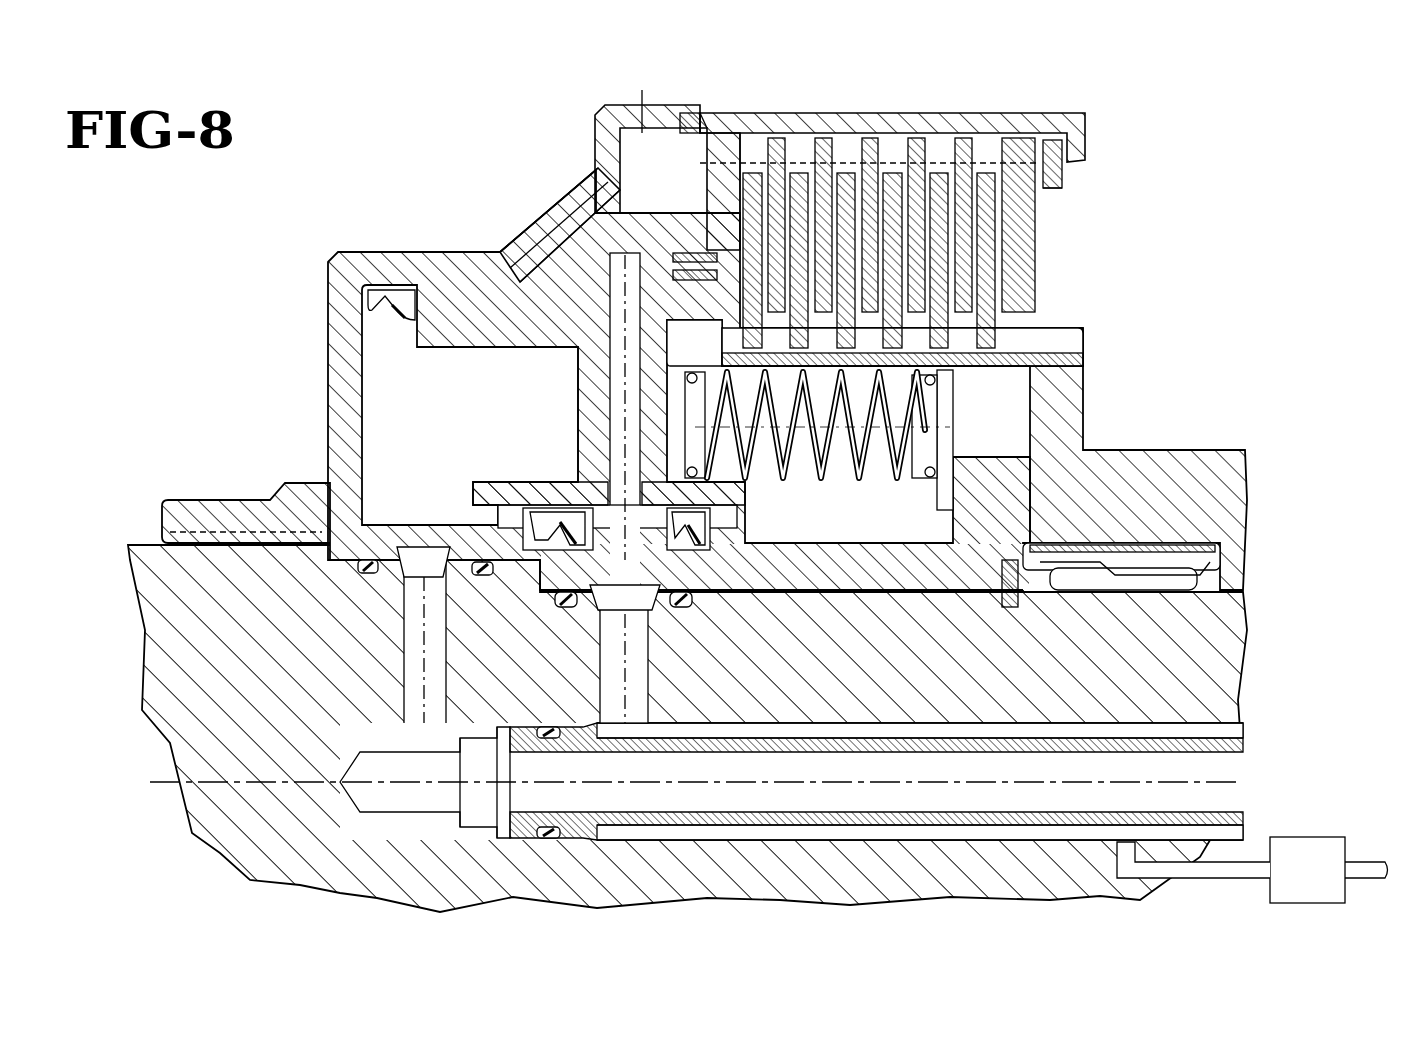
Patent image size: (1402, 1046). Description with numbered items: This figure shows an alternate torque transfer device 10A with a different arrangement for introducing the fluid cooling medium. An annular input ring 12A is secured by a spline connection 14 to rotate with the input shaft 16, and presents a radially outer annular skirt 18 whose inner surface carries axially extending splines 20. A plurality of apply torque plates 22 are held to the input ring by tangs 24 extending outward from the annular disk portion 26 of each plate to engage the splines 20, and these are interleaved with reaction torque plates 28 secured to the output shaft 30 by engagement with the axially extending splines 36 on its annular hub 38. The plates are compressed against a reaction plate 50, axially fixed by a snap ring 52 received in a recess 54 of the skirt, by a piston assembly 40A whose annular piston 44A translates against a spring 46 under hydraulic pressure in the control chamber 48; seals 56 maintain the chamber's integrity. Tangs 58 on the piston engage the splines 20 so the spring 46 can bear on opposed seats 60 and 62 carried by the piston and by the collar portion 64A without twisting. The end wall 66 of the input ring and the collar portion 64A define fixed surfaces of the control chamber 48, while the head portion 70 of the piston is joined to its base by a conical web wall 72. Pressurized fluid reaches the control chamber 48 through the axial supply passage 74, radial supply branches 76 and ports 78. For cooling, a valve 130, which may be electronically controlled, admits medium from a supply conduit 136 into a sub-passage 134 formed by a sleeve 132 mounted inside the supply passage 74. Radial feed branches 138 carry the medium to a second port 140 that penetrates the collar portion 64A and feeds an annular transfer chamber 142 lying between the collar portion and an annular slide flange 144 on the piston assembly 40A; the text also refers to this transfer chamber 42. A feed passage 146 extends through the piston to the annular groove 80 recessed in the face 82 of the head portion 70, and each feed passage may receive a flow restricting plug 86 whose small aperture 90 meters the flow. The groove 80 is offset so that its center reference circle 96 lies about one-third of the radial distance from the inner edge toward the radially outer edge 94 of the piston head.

The torque transfer device 10A is at (1150, 230).
The input ring 12A is at (518, 232).
The spline connection 14 is at (165, 535).
The input shaft 16 is at (180, 628).
The annular skirt 18 is at (870, 132).
The axially extending splines 20 is at (1072, 148).
The apply torque plates 22 is at (920, 285).
The tangs 24 is at (963, 140).
The annular disk portion 26 is at (963, 320).
The reaction torque plates 28 is at (943, 220).
The output shaft 30 is at (1197, 448).
The axially extending splines 36 is at (1065, 345).
The annular hub 38 is at (997, 370).
The piston assembly 40A is at (562, 236).
The transfer chamber 42 is at (845, 162).
The annular piston 44A is at (592, 220).
The spring 46 is at (862, 455).
The control chamber 48 is at (405, 418).
The reaction plate 50 is at (1018, 185).
The snap ring 52 is at (1055, 177).
The recess 54 is at (1052, 150).
The seals 56 is at (400, 300).
The tangs 58 is at (750, 168).
The seat 60 is at (695, 410).
The seat 62 is at (935, 445).
The collar portion 64A is at (885, 572).
The end wall 66 is at (345, 383).
The head portion 70 is at (695, 138).
The conical web wall 72 is at (583, 247).
The supply passage 74 is at (1210, 765).
The radial supply branches 76 is at (412, 642).
The ports 78 is at (436, 530).
The annular groove 80 is at (730, 277).
The face 82 is at (748, 152).
The flow restricting plug 86 is at (700, 275).
The aperture 90 is at (668, 258).
The radially outer edge 94 is at (707, 128).
The center reference circle 96 is at (625, 128).
The valve 130 is at (1307, 870).
The sleeve 132 is at (1165, 738).
The sub-passage 134 is at (1238, 730).
The supply conduit 136 is at (1360, 868).
The feed branches 138 is at (640, 685).
The second port 140 is at (640, 560).
The annular transfer chamber 142 is at (705, 500).
The annular slide flange 144 is at (532, 492).
The feed passage 146 is at (612, 366).